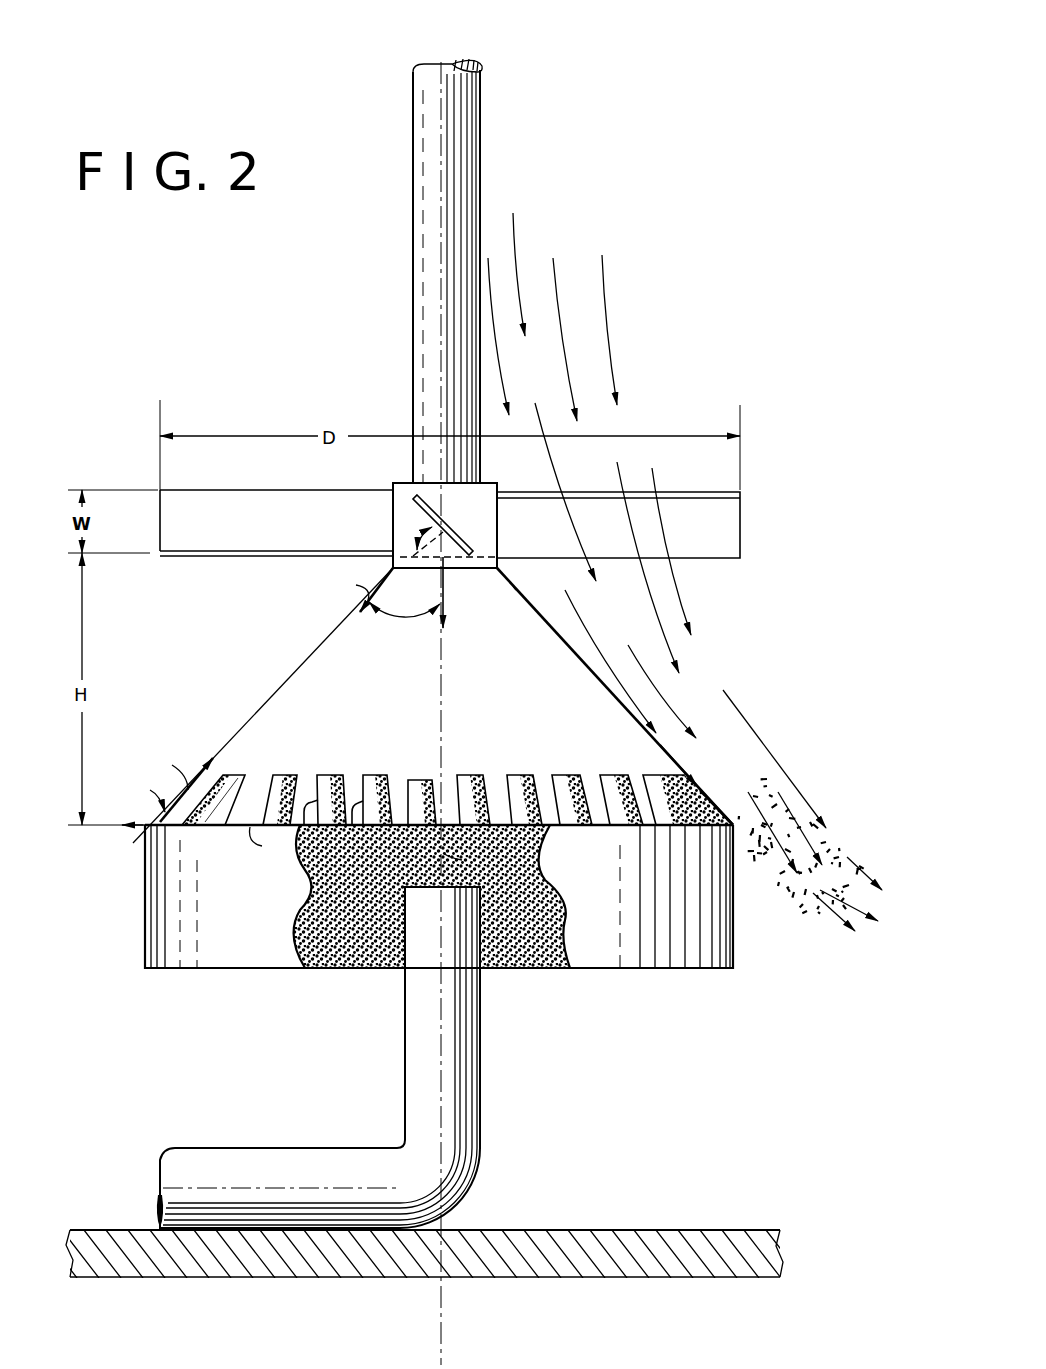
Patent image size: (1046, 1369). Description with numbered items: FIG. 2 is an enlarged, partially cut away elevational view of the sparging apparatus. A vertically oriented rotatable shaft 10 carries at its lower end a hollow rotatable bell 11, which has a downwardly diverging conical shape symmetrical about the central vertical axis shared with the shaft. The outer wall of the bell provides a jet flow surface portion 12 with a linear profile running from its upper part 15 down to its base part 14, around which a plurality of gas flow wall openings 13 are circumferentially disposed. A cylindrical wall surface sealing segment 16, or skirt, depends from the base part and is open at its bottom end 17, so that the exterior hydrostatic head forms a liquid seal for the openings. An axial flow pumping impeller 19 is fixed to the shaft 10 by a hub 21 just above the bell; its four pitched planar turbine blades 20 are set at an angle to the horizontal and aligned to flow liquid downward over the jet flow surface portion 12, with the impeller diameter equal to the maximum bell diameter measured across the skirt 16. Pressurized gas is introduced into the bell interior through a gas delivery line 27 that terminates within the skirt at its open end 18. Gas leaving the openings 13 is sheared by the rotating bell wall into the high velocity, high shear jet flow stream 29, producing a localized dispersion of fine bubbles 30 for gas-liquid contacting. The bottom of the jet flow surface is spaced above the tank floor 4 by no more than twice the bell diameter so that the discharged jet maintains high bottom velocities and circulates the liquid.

The floor 4 is at (540, 1279).
The rotatable shaft 10 is at (479, 207).
The hollow rotatable bell 11 is at (288, 678).
The jet flow surface portion 12 is at (583, 665).
The gas flow wall openings 13 is at (273, 785).
The base part 14 is at (712, 805).
The upper part 15 is at (513, 588).
The wall surface sealing segment 16 is at (735, 892).
The bottom end 17 is at (506, 970).
The open end 18 is at (410, 943).
The axial flow pumping impeller 19 is at (237, 490).
The impeller blades 20 is at (232, 520).
The hub 21 is at (397, 483).
The gas delivery line 27 is at (274, 1156).
The jet flow stream 29 is at (715, 717).
The scattered light 30 is at (818, 852).